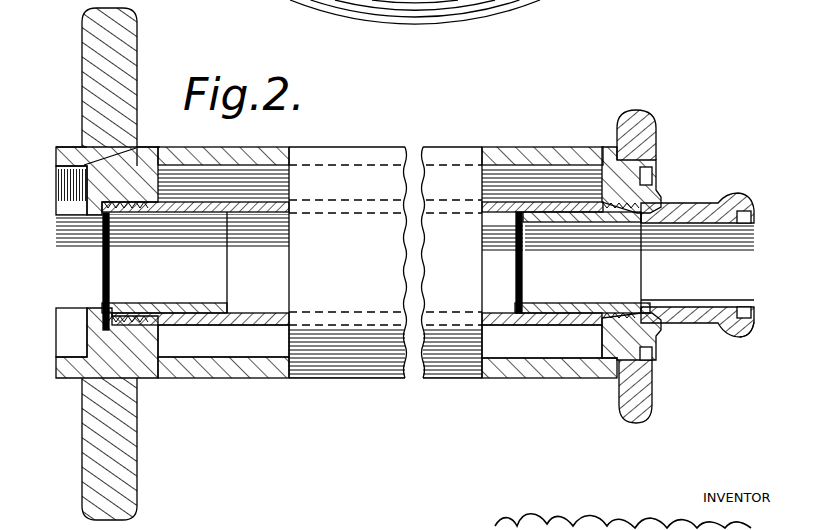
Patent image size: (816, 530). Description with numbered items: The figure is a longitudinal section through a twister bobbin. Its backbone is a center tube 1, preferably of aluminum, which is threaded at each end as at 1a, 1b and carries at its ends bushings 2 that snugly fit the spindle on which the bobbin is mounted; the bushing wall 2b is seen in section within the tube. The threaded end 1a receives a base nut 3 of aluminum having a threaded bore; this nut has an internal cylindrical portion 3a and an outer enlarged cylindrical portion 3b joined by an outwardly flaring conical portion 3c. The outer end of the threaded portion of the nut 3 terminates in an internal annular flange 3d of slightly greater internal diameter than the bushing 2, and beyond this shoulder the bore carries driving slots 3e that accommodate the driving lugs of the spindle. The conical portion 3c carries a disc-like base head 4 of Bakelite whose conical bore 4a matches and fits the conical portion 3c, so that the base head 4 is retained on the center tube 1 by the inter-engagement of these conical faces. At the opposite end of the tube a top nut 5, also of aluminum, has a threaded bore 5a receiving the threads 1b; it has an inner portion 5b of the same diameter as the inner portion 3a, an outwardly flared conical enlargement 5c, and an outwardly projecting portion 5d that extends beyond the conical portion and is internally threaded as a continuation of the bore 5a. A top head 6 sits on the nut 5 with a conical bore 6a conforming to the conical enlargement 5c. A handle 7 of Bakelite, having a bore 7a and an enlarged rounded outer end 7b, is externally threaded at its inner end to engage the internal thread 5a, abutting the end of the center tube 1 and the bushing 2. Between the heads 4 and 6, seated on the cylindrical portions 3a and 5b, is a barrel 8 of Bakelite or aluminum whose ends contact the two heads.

The center tube 1 is at (272, 314).
The threaded end 1a is at (137, 327).
The threaded end 1b is at (613, 327).
The bushing 2 is at (415, 0).
The pipe wall 2b is at (187, 281).
The base nut 3 is at (82, 377).
The internal cylindrical portion 3a is at (182, 126).
The outer enlarged cylindrical portion 3b is at (63, 147).
The conical portion 3c is at (168, 103).
The internal annular flange 3d is at (90, 305).
The driving slots 3e is at (63, 200).
The base head 4 is at (136, 20).
The conical bore 4a is at (112, 155).
The top nut 5 is at (657, 190).
The threaded bore 5a is at (621, 200).
The inner portion 5b is at (587, 378).
The conical enlargement 5c is at (654, 143).
The outwardly projecting portion 5d is at (661, 332).
The top head 6 is at (640, 115).
The conical bore 6a is at (634, 383).
The handle 7 is at (712, 204).
The bore 7a is at (680, 309).
The enlarged rounded outer end 7b is at (734, 340).
The barrel 8 is at (431, 139).